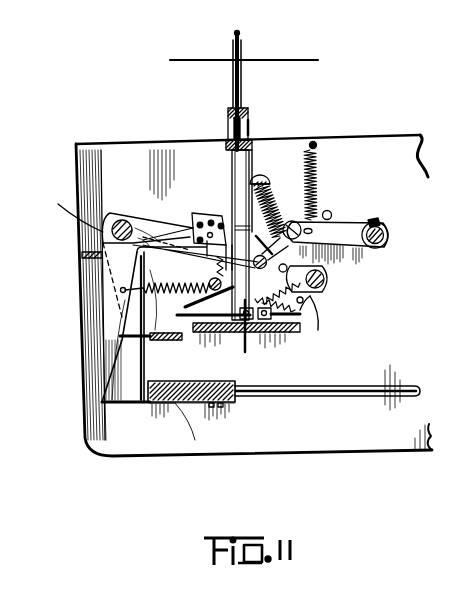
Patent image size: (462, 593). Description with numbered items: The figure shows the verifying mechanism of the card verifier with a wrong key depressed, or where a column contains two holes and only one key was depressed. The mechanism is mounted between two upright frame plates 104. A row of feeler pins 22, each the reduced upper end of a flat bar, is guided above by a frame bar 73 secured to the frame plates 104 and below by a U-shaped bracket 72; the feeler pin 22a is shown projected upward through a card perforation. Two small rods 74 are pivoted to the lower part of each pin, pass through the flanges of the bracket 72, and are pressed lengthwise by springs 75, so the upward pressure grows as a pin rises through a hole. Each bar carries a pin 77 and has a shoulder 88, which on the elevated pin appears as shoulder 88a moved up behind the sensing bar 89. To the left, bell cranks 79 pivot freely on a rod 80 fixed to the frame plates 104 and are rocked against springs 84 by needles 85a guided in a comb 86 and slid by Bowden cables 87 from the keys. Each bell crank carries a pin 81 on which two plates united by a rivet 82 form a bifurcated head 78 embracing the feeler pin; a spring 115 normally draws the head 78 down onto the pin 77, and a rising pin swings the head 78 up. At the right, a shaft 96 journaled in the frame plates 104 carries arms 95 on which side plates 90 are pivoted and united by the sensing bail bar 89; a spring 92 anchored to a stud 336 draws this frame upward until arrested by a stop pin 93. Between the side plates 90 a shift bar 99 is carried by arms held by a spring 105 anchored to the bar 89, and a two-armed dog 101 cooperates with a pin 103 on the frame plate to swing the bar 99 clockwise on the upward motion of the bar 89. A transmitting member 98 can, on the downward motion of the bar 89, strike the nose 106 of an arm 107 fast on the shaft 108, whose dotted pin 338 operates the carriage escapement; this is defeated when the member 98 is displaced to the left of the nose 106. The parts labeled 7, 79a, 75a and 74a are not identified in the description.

The needle plate arm 7 is at (260, 58).
The feeler pin 22 is at (233, 72).
The feeler pin projected through a card perforation 22a is at (234, 46).
The frame bar 73 is at (246, 108).
The frame plates 104 is at (133, 150).
The stud 336 is at (313, 141).
The spring 92 is at (318, 160).
The shoulder of elevated feeler pin 88a is at (234, 170).
The shoulder 88 is at (240, 200).
The sensing bail bar 89 is at (254, 180).
The side plates 90 is at (271, 183).
The spring 105 is at (282, 210).
The stop pin 93 is at (328, 210).
The arms 95 is at (352, 224).
The shaft 96 is at (388, 235).
The pivot pin 79a is at (117, 220).
The pivot rod 80 is at (146, 230).
The bell crank 79 is at (182, 226).
The bifurcated head 78 is at (208, 218).
The pin 81 is at (200, 228).
The cross rivet 82 is at (224, 250).
The spring 115 is at (206, 283).
The pin 77 is at (200, 308).
The needles 85a is at (126, 425).
The spring 84 is at (165, 324).
The screw 75a is at (241, 320).
The springs 75 is at (267, 320).
The rods 74 is at (250, 320).
The bracket 72 is at (182, 333).
The block 74a is at (210, 382).
The Bowden cable 87 is at (290, 402).
The comb 86 is at (192, 428).
The shift bar 99 is at (290, 250).
The dog 101 is at (288, 268).
The pin 103 is at (326, 282).
The transmitting member 98 is at (305, 289).
The shaft 108 is at (300, 302).
The pin 338 is at (304, 304).
The nose 106 is at (303, 312).
The arm 107 is at (320, 330).